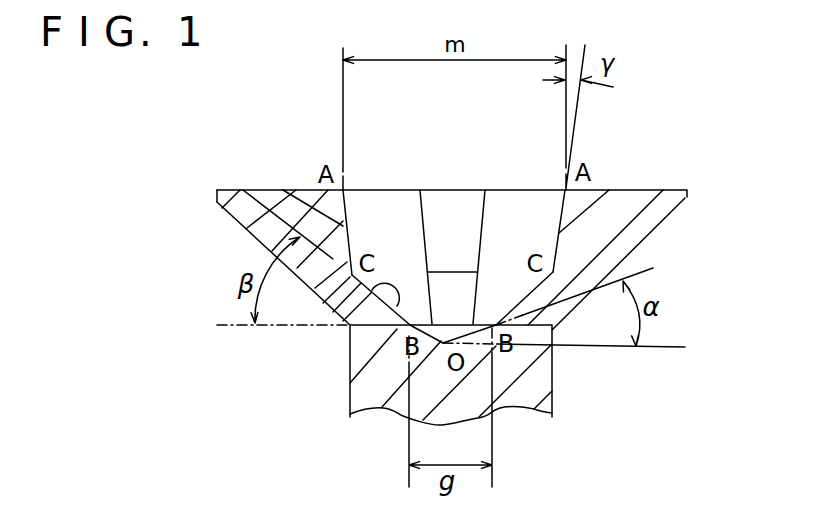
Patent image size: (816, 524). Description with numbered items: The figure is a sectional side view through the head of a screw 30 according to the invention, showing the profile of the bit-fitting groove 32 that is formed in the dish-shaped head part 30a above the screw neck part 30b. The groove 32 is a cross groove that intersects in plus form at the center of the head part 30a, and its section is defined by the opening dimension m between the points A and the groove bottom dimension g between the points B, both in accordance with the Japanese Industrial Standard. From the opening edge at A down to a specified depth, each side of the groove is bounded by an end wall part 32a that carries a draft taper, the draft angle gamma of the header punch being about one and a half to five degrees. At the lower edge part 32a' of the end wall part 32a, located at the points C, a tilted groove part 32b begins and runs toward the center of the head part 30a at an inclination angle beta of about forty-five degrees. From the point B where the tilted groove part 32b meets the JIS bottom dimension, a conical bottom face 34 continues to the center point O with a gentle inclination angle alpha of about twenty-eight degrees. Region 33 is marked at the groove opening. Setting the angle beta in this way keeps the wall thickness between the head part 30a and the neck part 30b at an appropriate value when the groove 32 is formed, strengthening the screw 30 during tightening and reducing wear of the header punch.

The screw 30 is at (668, 177).
The head part 30a is at (625, 240).
The screw neck part 30b is at (527, 375).
The bit-fitting groove 32 is at (496, 177).
The end wall part 32a is at (307, 186).
The lower edge part of end wall part 32a' is at (269, 301).
The tilted groove part 32b is at (353, 304).
The groove center region 33 is at (398, 190).
The conical bottom face 34 is at (448, 334).